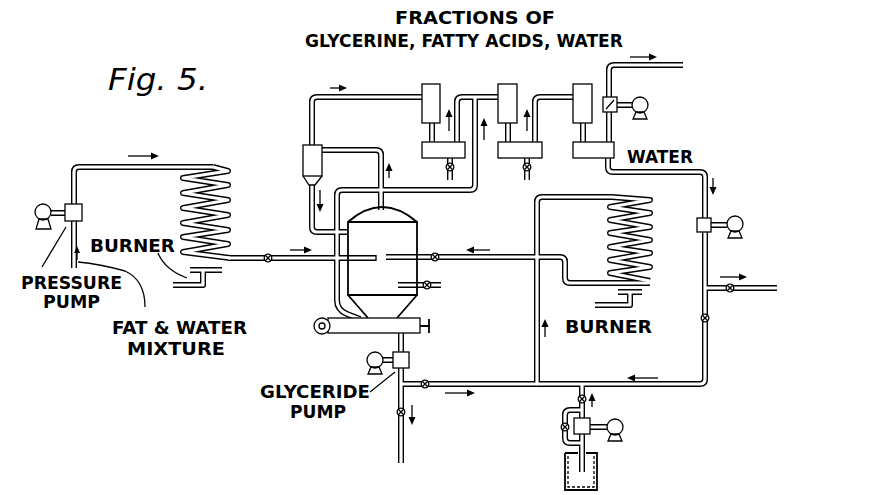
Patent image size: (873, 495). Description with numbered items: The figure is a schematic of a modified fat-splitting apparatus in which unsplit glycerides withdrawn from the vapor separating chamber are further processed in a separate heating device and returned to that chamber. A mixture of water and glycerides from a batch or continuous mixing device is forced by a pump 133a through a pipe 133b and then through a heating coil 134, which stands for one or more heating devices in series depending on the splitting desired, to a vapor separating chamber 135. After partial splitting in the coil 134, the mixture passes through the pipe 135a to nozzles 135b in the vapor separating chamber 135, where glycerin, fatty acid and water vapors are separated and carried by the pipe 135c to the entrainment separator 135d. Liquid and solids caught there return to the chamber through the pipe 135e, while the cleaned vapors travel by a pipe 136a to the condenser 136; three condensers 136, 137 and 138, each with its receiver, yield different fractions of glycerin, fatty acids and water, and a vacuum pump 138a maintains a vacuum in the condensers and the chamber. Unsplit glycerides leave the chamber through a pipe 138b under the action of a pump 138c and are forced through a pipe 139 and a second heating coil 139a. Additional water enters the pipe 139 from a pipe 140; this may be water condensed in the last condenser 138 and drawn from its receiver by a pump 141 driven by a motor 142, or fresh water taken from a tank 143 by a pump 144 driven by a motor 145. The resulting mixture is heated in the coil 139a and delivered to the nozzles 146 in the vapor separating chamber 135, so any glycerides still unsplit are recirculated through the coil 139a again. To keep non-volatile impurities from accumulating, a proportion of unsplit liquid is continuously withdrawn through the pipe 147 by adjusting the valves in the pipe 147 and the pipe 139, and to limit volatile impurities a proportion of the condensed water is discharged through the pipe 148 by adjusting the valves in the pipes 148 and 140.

The pump 133a is at (83, 213).
The pipe 133b is at (103, 165).
The heating coil 134 is at (212, 167).
The vapor separating chamber 135 is at (418, 226).
The pipe 135a is at (252, 262).
The nozzles 135b is at (374, 262).
The pipe 135c is at (360, 149).
The entrainment separator 135d is at (303, 150).
The pipe 135e is at (310, 196).
The condenser 136 is at (432, 88).
The pipe 136a is at (363, 97).
The condenser 137 is at (506, 88).
The condenser 138 is at (581, 87).
The vacuum pump 138a is at (616, 103).
The pipe 138b is at (405, 343).
The pump 138c is at (410, 360).
The pipe 139 is at (507, 365).
The heating coil 139a is at (645, 214).
The pipe 140 is at (697, 270).
The pump 141 is at (712, 218).
The motor 142 is at (745, 221).
The tank 143 is at (600, 472).
The pump 144 is at (593, 421).
The motor 145 is at (624, 428).
The nozzles 146 is at (392, 265).
The pipe 147 is at (408, 426).
The pipe 148 is at (760, 290).